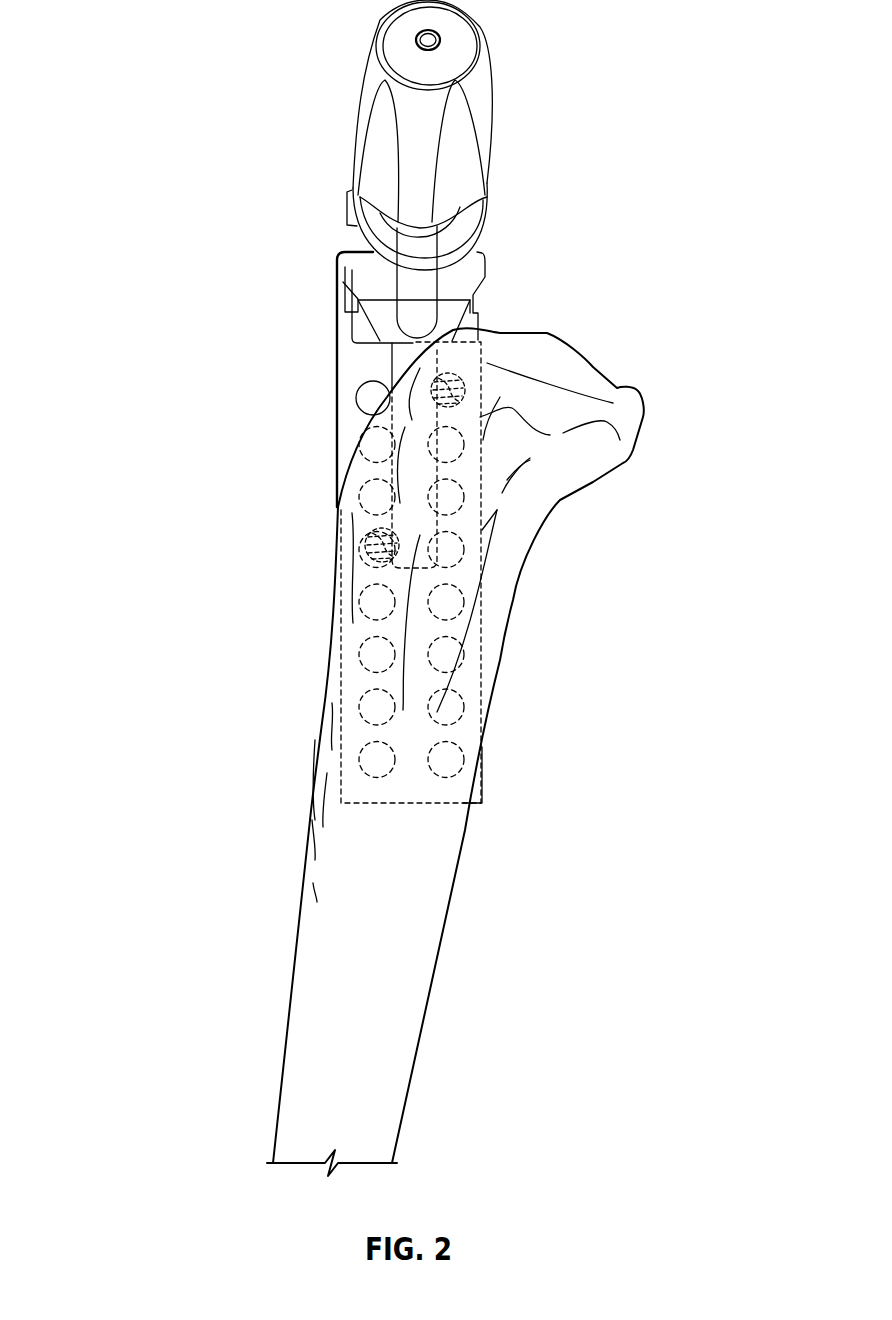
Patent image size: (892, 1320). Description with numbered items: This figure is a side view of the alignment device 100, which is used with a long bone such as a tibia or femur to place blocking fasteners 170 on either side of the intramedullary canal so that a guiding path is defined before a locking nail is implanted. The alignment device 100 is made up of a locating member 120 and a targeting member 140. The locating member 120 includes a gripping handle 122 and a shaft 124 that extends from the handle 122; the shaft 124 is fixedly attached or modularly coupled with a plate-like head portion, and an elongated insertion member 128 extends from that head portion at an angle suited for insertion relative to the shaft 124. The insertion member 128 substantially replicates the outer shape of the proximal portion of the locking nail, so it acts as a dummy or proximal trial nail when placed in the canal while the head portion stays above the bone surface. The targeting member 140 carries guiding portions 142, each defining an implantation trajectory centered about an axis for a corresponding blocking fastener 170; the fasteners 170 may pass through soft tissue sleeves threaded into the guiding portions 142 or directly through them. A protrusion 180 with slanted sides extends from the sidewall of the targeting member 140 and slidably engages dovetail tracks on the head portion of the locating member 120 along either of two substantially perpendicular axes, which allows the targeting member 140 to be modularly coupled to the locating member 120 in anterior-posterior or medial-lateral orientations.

The alignment device 100 is at (170, 43).
The locating member 120 is at (516, 153).
The gripping handle 122 is at (463, 160).
The shaft 124 is at (408, 290).
The insertion member 128 is at (385, 478).
The targeting member 140 is at (464, 679).
The guiding portions 142 is at (380, 708).
The blocking fasteners 170 is at (456, 374).
The protrusion 180 is at (520, 521).